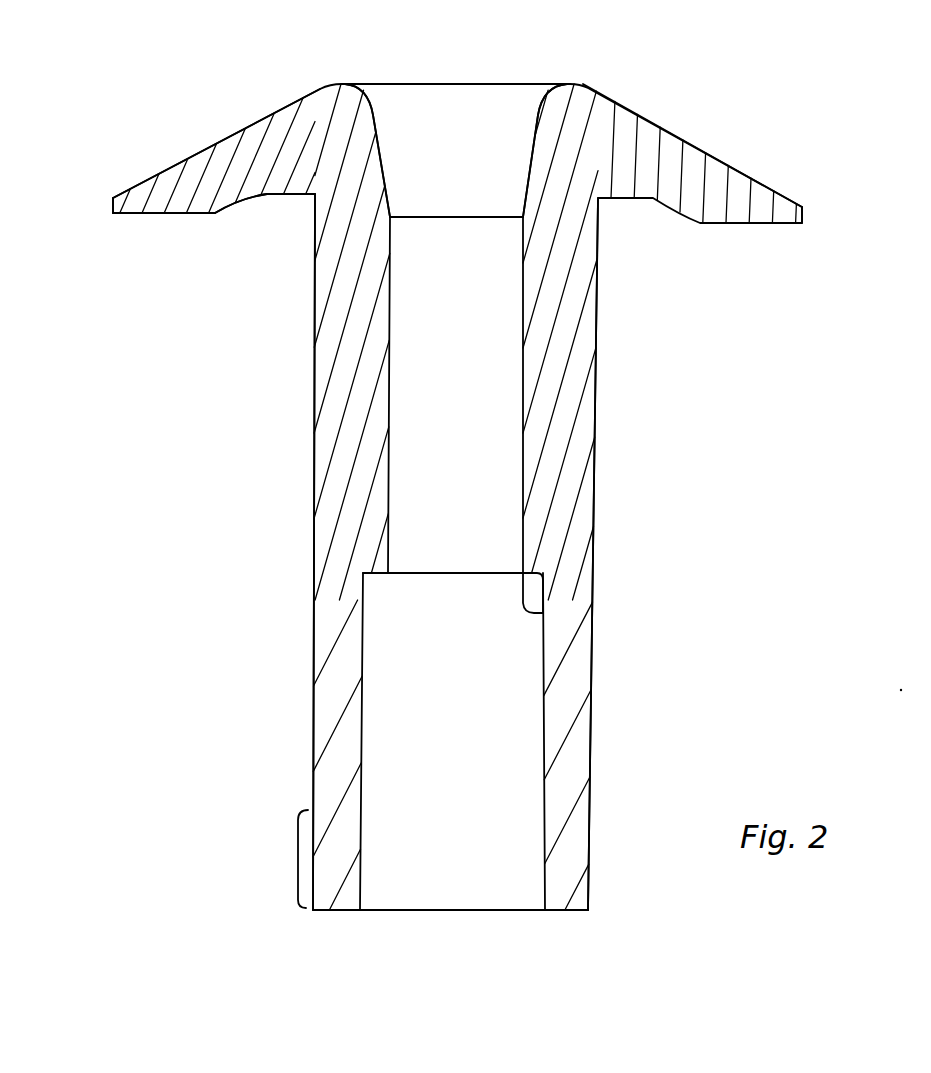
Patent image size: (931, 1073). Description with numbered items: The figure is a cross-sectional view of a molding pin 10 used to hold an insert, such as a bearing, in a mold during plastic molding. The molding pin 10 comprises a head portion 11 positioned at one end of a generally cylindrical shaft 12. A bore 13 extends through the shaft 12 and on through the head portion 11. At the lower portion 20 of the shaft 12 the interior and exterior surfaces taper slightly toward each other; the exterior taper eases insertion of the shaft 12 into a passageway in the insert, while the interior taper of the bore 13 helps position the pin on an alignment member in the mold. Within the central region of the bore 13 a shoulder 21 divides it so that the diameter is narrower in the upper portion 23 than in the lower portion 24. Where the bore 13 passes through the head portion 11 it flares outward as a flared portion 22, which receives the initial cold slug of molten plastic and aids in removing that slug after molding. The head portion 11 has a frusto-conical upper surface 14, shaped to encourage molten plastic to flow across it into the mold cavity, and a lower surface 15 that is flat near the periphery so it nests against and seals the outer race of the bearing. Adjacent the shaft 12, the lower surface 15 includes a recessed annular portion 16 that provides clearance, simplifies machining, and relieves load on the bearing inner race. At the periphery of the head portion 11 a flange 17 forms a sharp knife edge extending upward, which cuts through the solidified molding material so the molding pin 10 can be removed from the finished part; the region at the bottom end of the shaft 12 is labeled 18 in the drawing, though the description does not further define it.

The molding pin 10 is at (146, 481).
The head portion 11 is at (668, 132).
The shaft 12 is at (596, 461).
The bore 13 is at (407, 848).
The upper surface 14 is at (226, 138).
The lower surface 15 is at (175, 216).
The recessed annular portion 16 is at (278, 196).
The flange 17 is at (113, 198).
The bottom end of shank 18 is at (563, 915).
The lower portion 20 is at (298, 855).
The shoulder 21 is at (548, 613).
The flared portion 22 is at (505, 133).
The upper portion 23 is at (488, 358).
The lower portion 24 is at (500, 727).